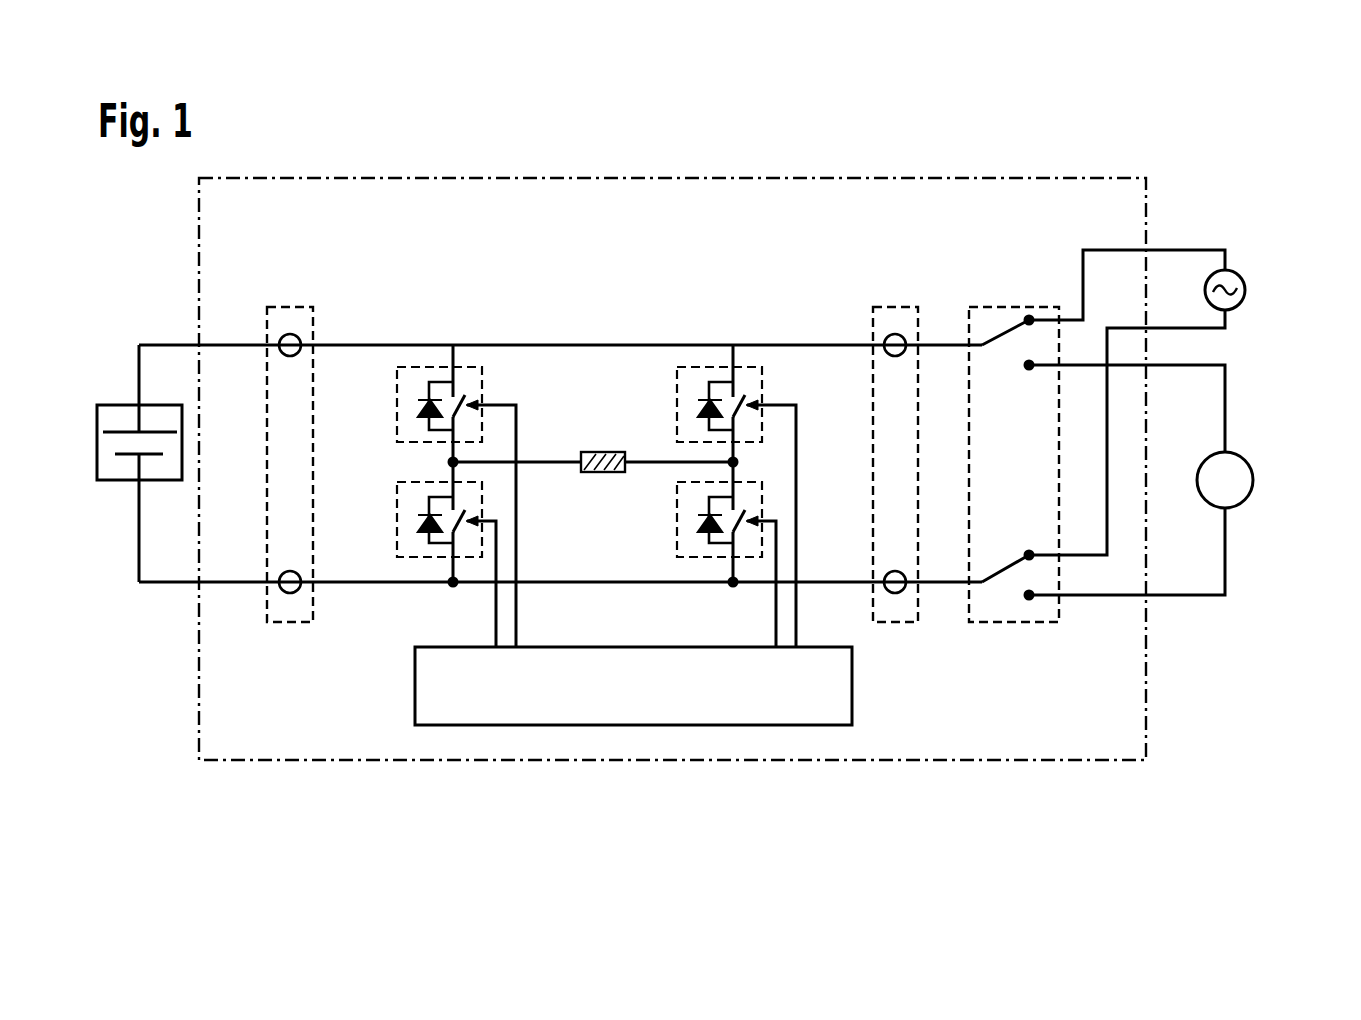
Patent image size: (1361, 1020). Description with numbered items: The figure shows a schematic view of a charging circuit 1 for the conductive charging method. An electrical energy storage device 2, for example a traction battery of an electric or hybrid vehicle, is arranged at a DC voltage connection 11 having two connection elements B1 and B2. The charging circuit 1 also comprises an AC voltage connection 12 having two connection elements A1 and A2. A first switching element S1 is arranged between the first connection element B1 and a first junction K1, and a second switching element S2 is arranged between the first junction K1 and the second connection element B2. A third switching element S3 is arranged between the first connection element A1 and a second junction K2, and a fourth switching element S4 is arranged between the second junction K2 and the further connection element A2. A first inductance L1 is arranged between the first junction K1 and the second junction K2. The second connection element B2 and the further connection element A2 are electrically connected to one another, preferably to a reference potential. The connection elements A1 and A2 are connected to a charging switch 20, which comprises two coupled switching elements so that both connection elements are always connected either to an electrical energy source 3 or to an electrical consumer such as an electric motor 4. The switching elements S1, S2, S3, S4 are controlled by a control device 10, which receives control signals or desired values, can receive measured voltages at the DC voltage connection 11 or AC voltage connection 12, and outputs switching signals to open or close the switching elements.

The charging circuit 1 is at (198, 255).
The electrical energy storage device 2 is at (110, 480).
The electrical energy source 3 is at (1244, 295).
The electric motor 4 is at (1252, 493).
The control device 10 is at (415, 715).
The DC voltage connection 11 is at (289, 307).
The AC voltage connection 12 is at (895, 307).
The charging switch 20 is at (992, 307).
The first connection element B1 is at (297, 335).
The second connection element B2 is at (290, 593).
The first connection element A1 is at (889, 336).
The further connection element A2 is at (895, 593).
The first switching element S1 is at (482, 375).
The second switching element S2 is at (482, 505).
The third switching element S3 is at (768, 499).
The fourth switching element S4 is at (768, 564).
The first junction K1 is at (450, 462).
The second junction K2 is at (736, 462).
The first inductance L1 is at (600, 452).